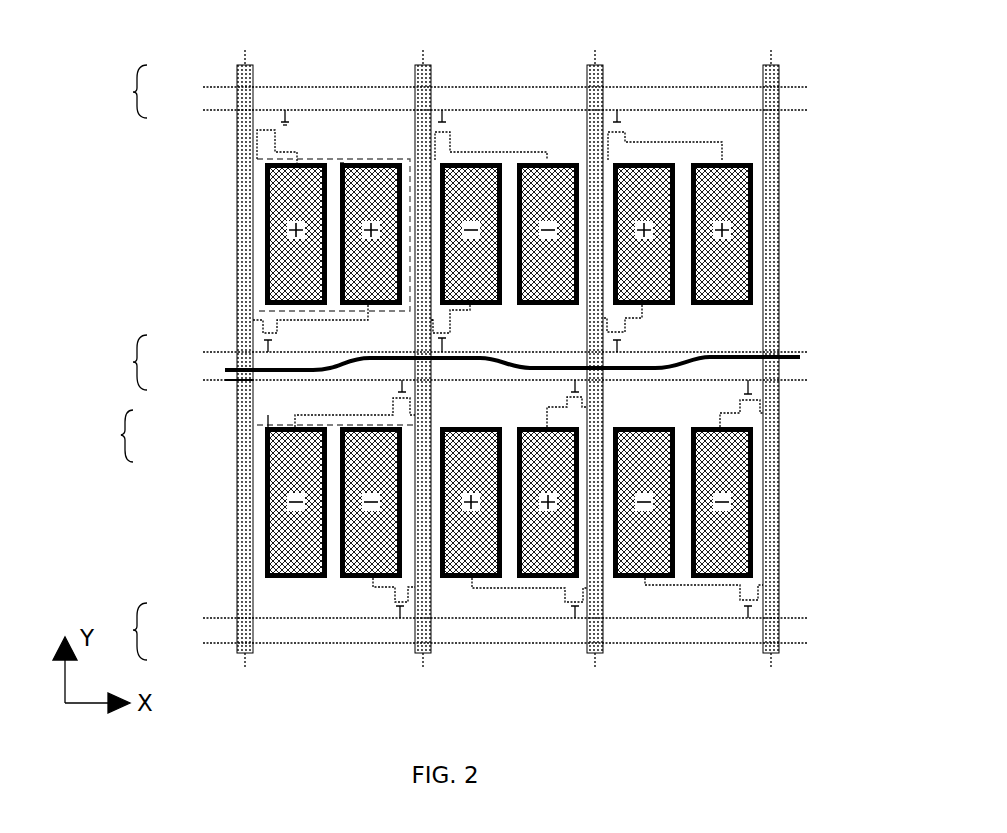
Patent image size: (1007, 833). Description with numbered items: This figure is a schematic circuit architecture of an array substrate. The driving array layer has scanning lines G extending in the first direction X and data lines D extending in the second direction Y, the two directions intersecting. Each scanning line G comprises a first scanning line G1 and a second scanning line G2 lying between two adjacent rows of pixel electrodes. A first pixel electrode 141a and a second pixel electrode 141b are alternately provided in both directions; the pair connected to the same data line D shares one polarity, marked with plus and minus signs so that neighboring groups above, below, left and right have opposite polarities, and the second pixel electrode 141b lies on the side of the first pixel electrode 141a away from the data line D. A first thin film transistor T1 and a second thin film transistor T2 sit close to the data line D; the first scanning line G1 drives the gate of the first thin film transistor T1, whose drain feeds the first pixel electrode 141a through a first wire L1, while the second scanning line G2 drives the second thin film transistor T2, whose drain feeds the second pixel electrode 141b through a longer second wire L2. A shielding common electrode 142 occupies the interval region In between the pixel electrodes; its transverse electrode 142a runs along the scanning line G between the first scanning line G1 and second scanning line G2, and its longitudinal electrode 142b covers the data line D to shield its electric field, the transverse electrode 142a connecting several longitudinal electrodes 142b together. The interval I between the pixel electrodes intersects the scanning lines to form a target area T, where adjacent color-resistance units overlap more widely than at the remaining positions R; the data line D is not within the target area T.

The data line D is at (508, 339).
The scanning line G is at (126, 362).
The first scanning line G1 is at (481, 384).
The second scanning line G2 is at (481, 345).
The first pixel electrode 141a is at (288, 252).
The second pixel electrode 141b is at (372, 165).
The shielding common electrode 142 is at (438, 412).
The transverse electrode 142a is at (228, 373).
The longitudinal electrode 142b is at (240, 386).
The target area T is at (285, 122).
The first thin film transistor T1 is at (245, 138).
The second thin film transistor T2 is at (262, 330).
The first wire L1 is at (283, 150).
The second wire L2 is at (490, 152).
The remaining positions R is at (335, 185).
The interval I is at (418, 330).
The interval region In is at (268, 420).